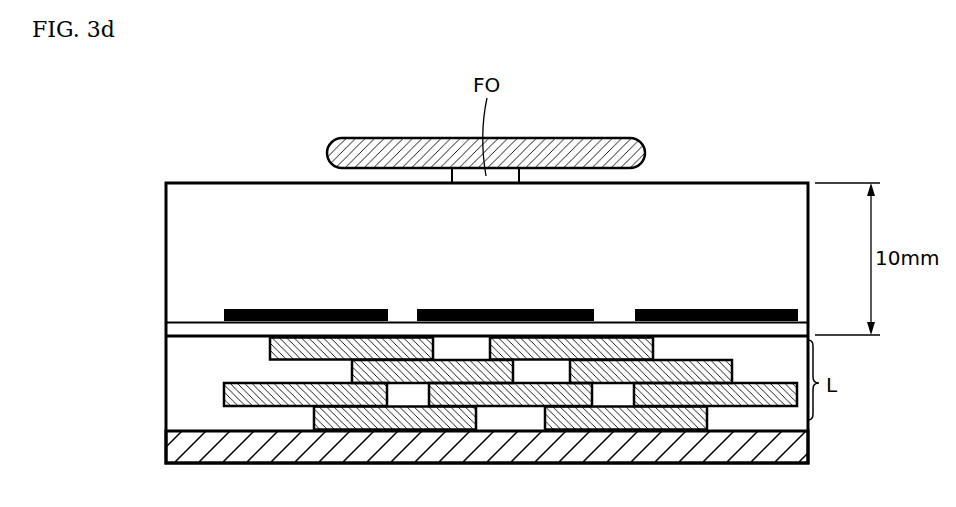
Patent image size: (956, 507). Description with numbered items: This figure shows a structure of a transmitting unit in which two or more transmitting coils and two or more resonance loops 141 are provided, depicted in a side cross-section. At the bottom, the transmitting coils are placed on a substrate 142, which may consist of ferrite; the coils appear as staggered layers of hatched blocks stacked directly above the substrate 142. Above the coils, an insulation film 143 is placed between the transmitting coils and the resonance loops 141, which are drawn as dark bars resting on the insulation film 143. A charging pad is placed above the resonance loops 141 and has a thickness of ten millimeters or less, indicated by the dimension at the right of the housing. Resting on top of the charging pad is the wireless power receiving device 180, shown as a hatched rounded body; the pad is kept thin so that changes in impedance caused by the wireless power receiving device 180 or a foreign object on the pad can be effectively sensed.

The wireless power receiving device 180 is at (647, 152).
The resonance loop 141 is at (594, 311).
The insulation film 143 is at (175, 327).
The substrate 142 is at (800, 450).